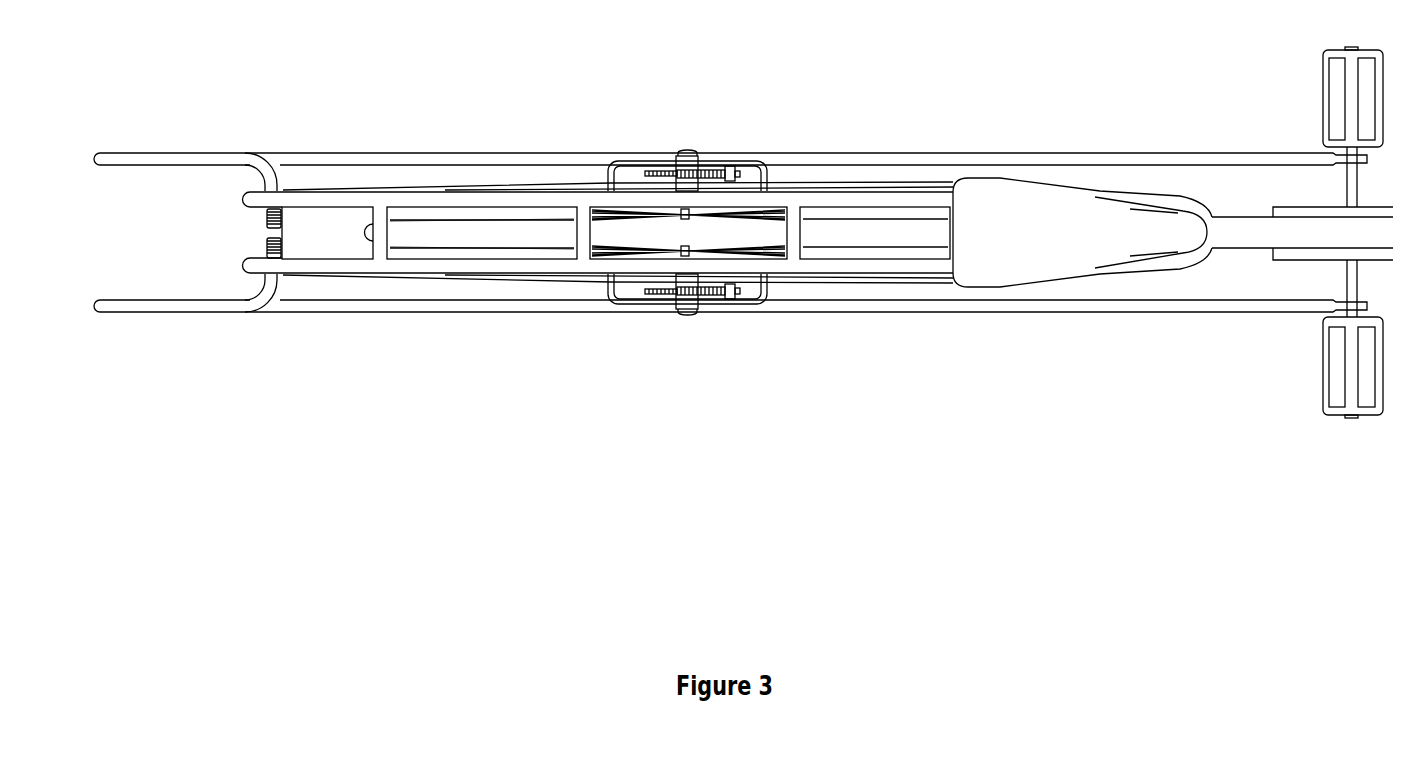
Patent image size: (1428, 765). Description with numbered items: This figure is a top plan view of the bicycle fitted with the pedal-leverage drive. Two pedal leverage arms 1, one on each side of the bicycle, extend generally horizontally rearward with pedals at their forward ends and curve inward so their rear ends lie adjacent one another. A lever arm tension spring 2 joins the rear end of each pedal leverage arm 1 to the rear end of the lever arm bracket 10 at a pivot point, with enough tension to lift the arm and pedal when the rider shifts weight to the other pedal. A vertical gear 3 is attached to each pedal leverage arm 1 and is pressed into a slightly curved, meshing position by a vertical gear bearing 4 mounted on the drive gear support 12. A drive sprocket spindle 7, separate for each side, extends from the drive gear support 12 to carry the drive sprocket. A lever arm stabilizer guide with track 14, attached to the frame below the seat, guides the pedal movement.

The pedal leverage arm 1 is at (308, 313).
The lever arm tension spring 2 is at (265, 247).
The vertical gear 3 is at (712, 295).
The vertical gear bearing 4 is at (735, 298).
The drive sprocket spindle 7 is at (688, 312).
The lever arm bracket 10 is at (429, 268).
The drive gear support 12 is at (615, 302).
The lever arm stabilizer guide with track 14 is at (1377, 258).